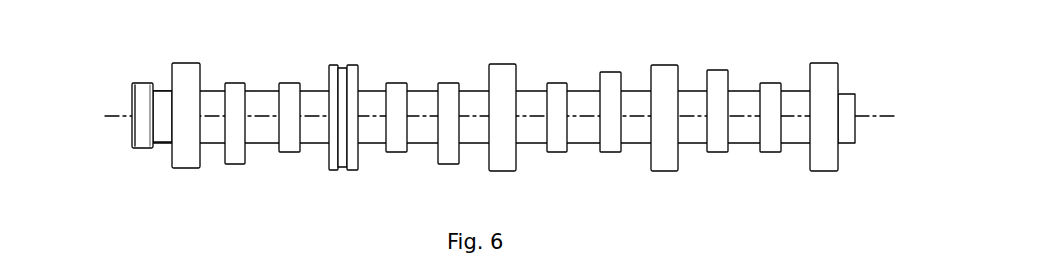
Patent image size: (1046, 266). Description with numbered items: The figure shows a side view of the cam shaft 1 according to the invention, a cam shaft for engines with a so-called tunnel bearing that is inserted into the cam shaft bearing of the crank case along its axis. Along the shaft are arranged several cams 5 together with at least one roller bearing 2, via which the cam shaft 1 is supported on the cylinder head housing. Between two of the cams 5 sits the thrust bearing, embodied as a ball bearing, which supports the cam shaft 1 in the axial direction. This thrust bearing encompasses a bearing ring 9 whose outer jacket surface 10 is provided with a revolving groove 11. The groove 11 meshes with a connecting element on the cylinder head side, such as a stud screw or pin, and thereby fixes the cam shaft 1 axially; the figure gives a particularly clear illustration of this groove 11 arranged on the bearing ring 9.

The cam shaft 1 is at (680, 52).
The roller bearing 2 is at (663, 160).
The cam 5 is at (292, 157).
The bearing ring 9 is at (363, 86).
The outer jacket surface 10 is at (333, 65).
The revolving groove 11 is at (344, 67).